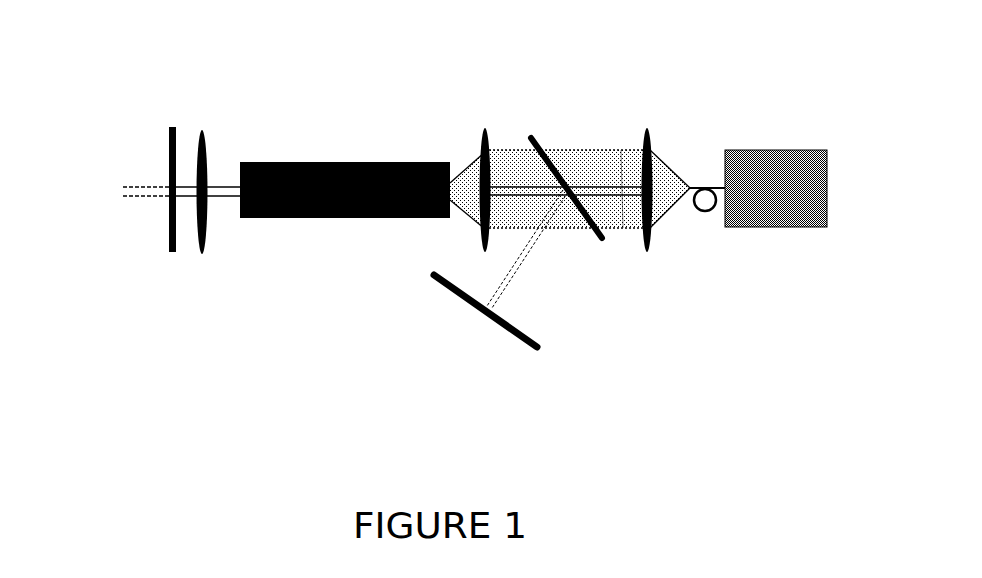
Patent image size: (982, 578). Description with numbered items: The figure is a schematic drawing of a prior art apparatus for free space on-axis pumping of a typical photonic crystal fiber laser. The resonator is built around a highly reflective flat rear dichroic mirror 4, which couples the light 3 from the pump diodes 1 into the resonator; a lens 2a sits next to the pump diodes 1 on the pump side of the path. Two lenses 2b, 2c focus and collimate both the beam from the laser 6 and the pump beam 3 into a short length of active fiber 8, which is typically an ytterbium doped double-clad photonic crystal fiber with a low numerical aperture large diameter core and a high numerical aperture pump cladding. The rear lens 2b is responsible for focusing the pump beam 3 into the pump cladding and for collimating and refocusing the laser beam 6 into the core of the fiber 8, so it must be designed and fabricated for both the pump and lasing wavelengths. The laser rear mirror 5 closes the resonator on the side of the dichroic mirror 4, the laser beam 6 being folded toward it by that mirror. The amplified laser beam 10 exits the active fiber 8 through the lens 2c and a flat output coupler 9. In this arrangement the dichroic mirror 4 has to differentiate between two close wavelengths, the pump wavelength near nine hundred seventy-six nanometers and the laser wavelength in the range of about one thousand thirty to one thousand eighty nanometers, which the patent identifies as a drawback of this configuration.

The pump diodes 1 is at (793, 150).
The lens 2a is at (648, 128).
The rear lens 2b is at (485, 128).
The lens 2c is at (203, 130).
The pump beam 3 is at (623, 228).
The rear dichroic mirror 4 is at (533, 138).
The laser rear mirror 5 is at (457, 295).
The laser beam 6 is at (525, 260).
The active fiber 8 is at (393, 162).
The flat output coupler 9 is at (168, 227).
The amplified laser beam 10 is at (125, 196).